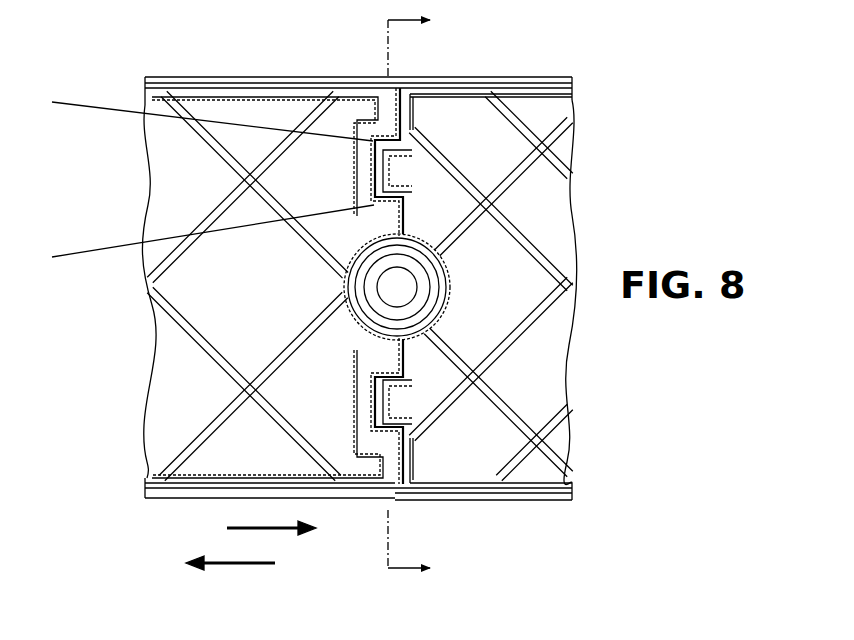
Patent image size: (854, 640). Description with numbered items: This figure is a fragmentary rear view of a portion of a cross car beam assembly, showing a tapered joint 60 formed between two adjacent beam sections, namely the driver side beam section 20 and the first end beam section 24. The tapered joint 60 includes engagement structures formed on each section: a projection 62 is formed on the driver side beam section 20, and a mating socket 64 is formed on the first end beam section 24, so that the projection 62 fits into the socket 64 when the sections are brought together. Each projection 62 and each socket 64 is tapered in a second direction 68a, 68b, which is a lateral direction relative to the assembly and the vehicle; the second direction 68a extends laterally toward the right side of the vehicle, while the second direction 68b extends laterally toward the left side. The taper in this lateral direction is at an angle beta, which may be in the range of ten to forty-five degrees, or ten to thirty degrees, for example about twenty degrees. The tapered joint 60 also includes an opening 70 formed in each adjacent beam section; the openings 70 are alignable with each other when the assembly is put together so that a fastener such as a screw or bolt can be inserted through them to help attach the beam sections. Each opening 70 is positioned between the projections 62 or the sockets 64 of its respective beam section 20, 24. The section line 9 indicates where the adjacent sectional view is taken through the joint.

The driver side beam section 20 is at (500, 77).
The first end beam section 24 is at (310, 77).
The tapered joint 60 is at (462, 516).
The projection 62 is at (374, 404).
The socket 64 is at (374, 177).
The opening 70 is at (397, 287).
The second direction 68a is at (273, 531).
The second direction 68b is at (228, 568).
The section line 9- 9 is at (426, 296).